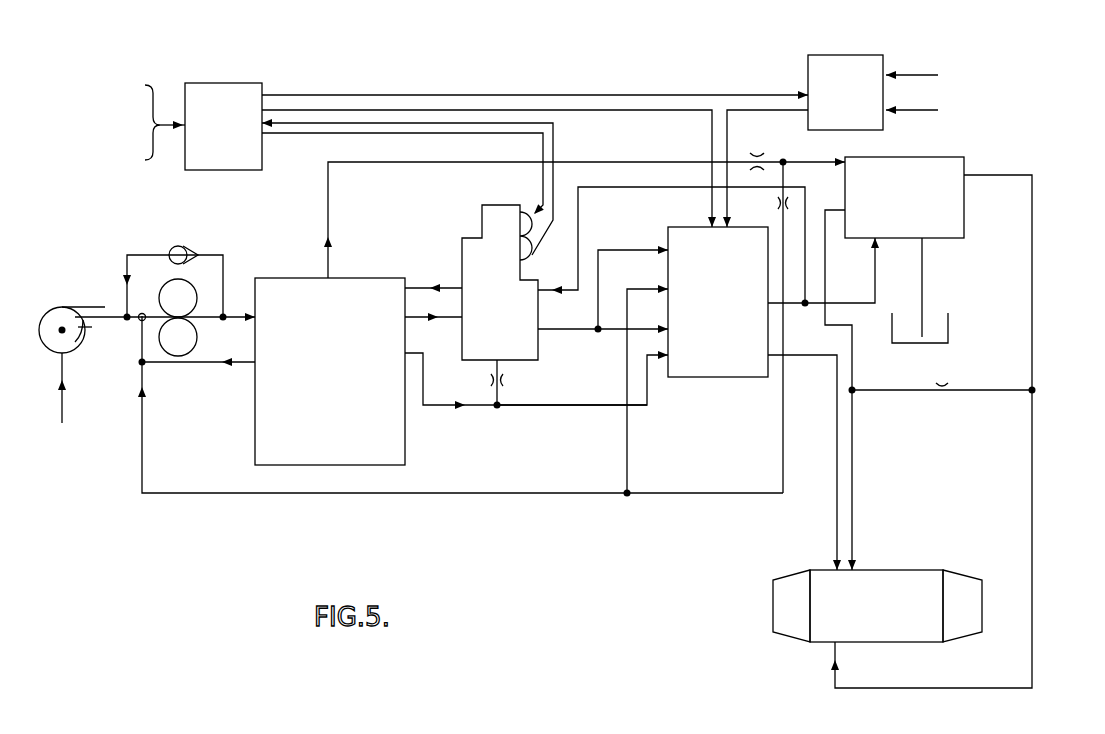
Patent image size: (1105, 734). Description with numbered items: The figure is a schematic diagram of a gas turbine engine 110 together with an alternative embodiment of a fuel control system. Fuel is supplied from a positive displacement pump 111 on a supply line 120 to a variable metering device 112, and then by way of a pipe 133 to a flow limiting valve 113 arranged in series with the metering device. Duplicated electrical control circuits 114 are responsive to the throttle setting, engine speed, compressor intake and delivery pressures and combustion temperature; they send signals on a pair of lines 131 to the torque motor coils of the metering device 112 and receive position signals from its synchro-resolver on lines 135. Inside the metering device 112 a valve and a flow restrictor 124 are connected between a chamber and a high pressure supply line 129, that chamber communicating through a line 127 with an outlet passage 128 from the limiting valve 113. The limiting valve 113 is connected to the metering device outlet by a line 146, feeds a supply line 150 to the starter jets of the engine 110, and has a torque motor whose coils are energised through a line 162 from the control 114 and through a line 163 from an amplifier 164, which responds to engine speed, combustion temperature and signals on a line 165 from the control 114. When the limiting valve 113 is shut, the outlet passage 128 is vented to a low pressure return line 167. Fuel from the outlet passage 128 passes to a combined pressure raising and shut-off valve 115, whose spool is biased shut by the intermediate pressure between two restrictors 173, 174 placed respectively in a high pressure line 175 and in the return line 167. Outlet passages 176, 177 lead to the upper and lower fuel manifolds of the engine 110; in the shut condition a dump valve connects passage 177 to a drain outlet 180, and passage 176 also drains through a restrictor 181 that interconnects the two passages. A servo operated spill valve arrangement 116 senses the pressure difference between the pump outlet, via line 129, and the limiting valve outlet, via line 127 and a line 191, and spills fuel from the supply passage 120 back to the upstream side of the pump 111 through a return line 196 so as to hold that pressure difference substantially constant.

The gas turbine engine 110 is at (910, 595).
The positive displacement pump 111 is at (185, 340).
The variable metering device 112 is at (495, 228).
The flow limiting valve 113 is at (722, 367).
The electrical control circuits 114 is at (237, 145).
The combined pressure raising and shut-off valve device 115 is at (952, 217).
The servo operated spill valve arrangement 116 is at (358, 298).
The supply line 120 is at (447, 318).
The flow restrictor 124 is at (507, 380).
The line 127 is at (638, 187).
The outlet passage 128 is at (875, 280).
The high pressure supply line 129 is at (527, 407).
The lines 131 is at (508, 135).
The pipe 133 is at (573, 330).
The lines 135 is at (525, 122).
The line 146 is at (610, 250).
The supply line 150 is at (810, 357).
The line 162 is at (690, 110).
The line 163 is at (728, 137).
The amplifier 164 is at (870, 78).
The line 165 is at (762, 95).
The low pressure return line 167 is at (713, 495).
The restrictor 173 is at (770, 160).
The restrictor 174 is at (773, 205).
The high pressure line 175 is at (410, 163).
The outlet passage 176 is at (855, 360).
The outlet passage 177 is at (1033, 220).
The drain outlet 180 is at (927, 302).
The restrictor 181 is at (945, 395).
The line 191 is at (452, 288).
The return line 196 is at (163, 363).